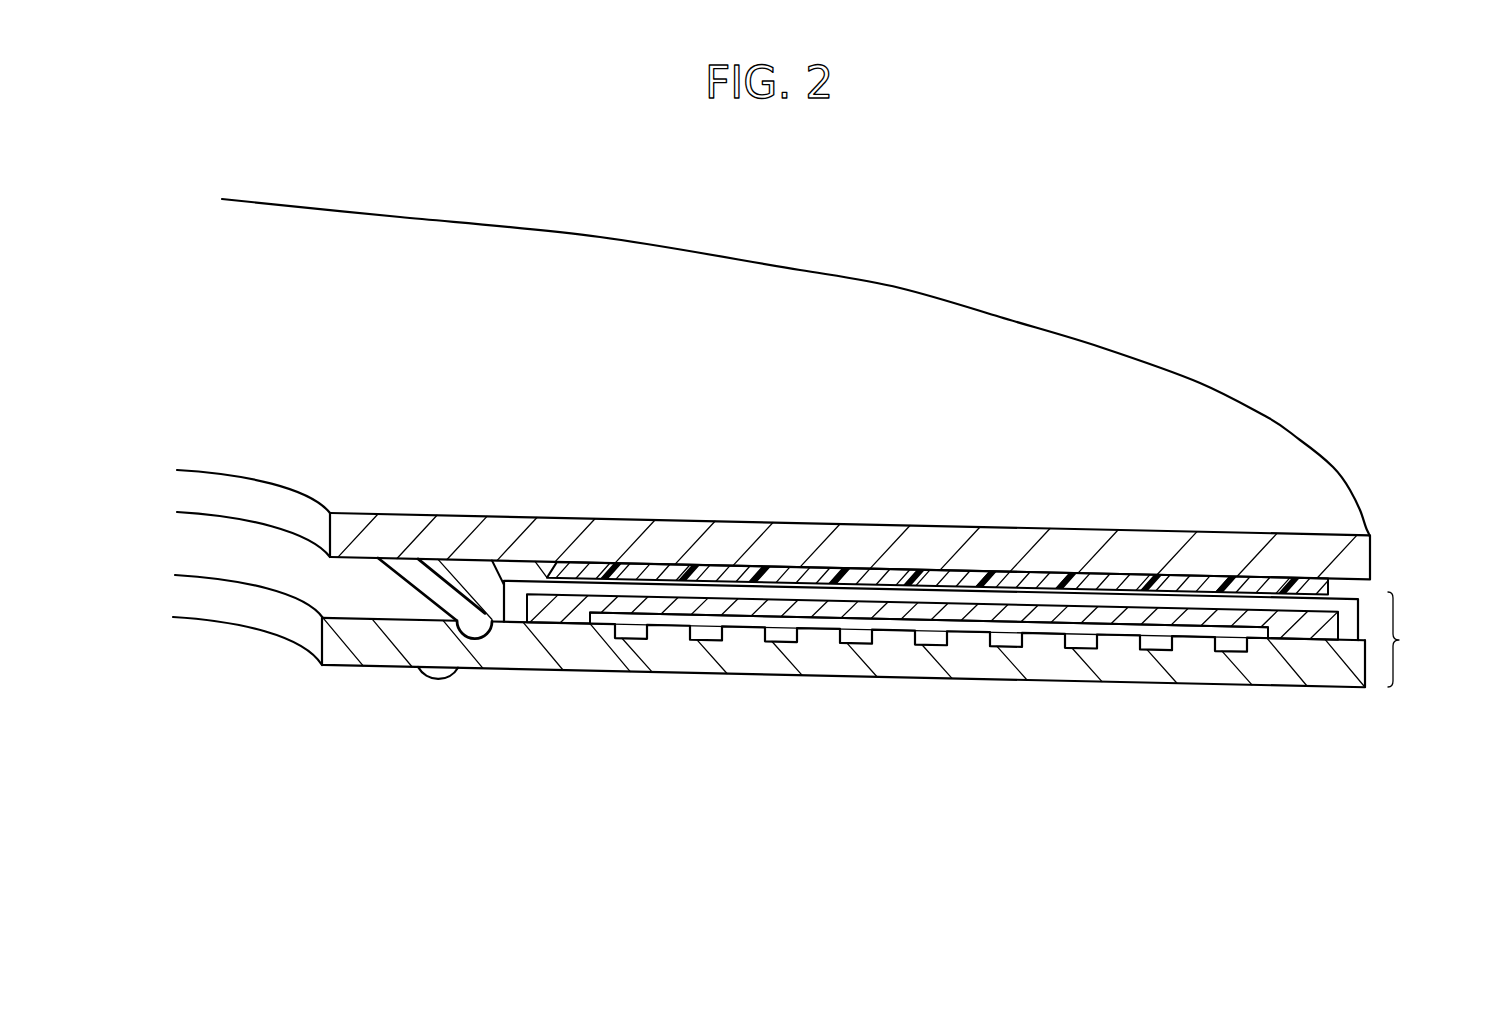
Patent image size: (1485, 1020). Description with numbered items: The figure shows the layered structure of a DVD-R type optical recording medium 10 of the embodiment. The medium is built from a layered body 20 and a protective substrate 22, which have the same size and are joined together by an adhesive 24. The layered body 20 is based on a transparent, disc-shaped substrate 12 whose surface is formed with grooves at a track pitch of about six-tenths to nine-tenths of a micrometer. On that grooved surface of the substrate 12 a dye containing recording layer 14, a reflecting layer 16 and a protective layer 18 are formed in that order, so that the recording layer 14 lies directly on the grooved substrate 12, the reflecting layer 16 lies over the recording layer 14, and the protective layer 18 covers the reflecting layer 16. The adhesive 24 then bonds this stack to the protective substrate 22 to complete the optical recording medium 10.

The DVD-R type optical recording medium 10 is at (1051, 267).
The transparent, disc-shaped substrate 12 is at (430, 643).
The dye containing recording layer 14 is at (932, 632).
The reflecting layer 16 is at (1058, 620).
The protective layer 18 is at (723, 592).
The layered body 20 is at (1422, 639).
The protective substrate 22 is at (452, 532).
The adhesive 24 is at (1127, 578).